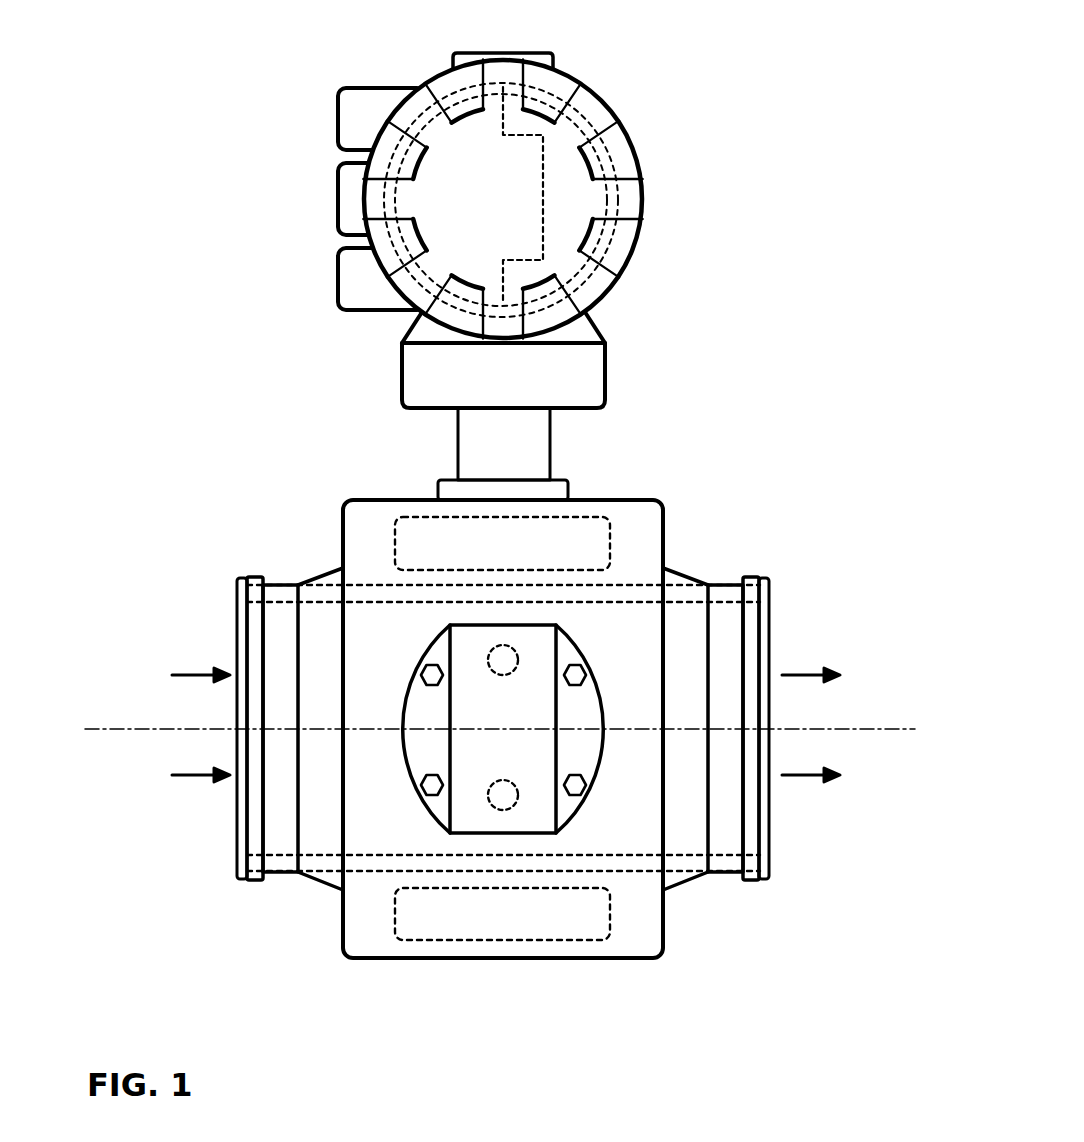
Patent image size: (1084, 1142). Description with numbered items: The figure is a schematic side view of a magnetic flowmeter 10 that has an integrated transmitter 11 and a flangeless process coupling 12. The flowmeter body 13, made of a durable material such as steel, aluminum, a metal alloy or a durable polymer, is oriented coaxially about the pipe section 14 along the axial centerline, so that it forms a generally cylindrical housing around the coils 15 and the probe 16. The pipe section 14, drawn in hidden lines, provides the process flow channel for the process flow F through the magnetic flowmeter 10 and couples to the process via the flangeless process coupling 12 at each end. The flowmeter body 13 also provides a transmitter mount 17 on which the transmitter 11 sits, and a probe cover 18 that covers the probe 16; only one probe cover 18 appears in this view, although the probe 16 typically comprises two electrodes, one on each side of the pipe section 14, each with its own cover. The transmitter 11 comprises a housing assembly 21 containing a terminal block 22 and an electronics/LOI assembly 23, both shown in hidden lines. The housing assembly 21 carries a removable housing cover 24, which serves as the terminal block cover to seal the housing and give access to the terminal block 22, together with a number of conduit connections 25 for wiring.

The magnetic flowmeter 10 is at (498, 527).
The integrated transmitter 11 is at (502, 211).
The flangeless process coupling 12 is at (772, 554).
The flowmeter body 13 is at (347, 498).
The pipe section 14 is at (328, 594).
The coils 15 is at (519, 560).
The probe 16 is at (505, 797).
The transmitter mount 17 is at (400, 375).
The probe cover 18 is at (578, 702).
The housing assembly 21 is at (440, 78).
The terminal block 22 is at (545, 212).
The electronics/LOI assembly 23 is at (613, 153).
The removable housing cover 24 is at (375, 197).
The conduit connections 25 is at (350, 120).